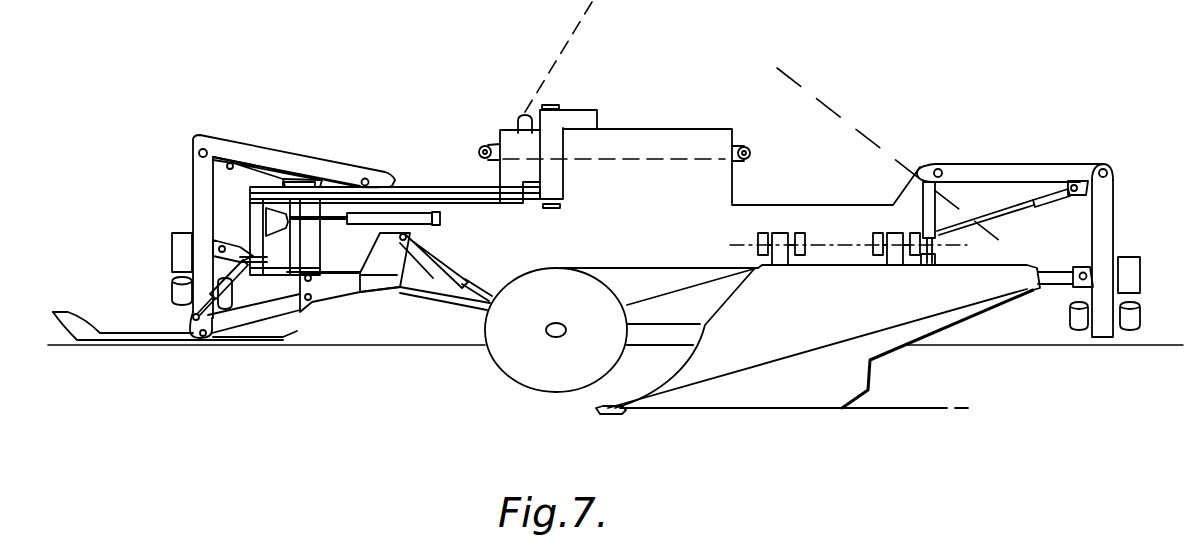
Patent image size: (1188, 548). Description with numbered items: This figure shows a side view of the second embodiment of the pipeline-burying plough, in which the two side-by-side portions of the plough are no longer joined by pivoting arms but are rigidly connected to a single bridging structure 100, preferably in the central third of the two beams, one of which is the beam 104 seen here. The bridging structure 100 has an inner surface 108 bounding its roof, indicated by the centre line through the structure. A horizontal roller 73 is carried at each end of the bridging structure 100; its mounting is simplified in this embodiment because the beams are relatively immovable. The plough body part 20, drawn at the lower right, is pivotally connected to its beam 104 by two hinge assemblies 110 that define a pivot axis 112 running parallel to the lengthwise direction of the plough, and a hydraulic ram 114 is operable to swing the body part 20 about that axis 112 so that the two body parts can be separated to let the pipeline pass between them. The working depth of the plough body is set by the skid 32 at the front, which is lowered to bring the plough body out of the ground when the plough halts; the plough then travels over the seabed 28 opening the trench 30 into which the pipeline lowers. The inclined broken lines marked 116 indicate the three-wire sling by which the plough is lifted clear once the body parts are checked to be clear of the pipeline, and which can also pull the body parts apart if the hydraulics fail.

The plough body part 20 is at (850, 387).
The seabed 28 is at (400, 305).
The trench 30 is at (1158, 372).
The skid 32 is at (105, 340).
The horizontal roller 73 is at (490, 143).
The bridging structure 100 is at (636, 130).
The beam 104 is at (527, 250).
The inner surface 108 is at (664, 160).
The hinge assembly 110 is at (892, 226).
The pivot axis 112 is at (841, 247).
The hydraulic ram 114 is at (936, 203).
The three-wire sling 116 is at (566, 42).